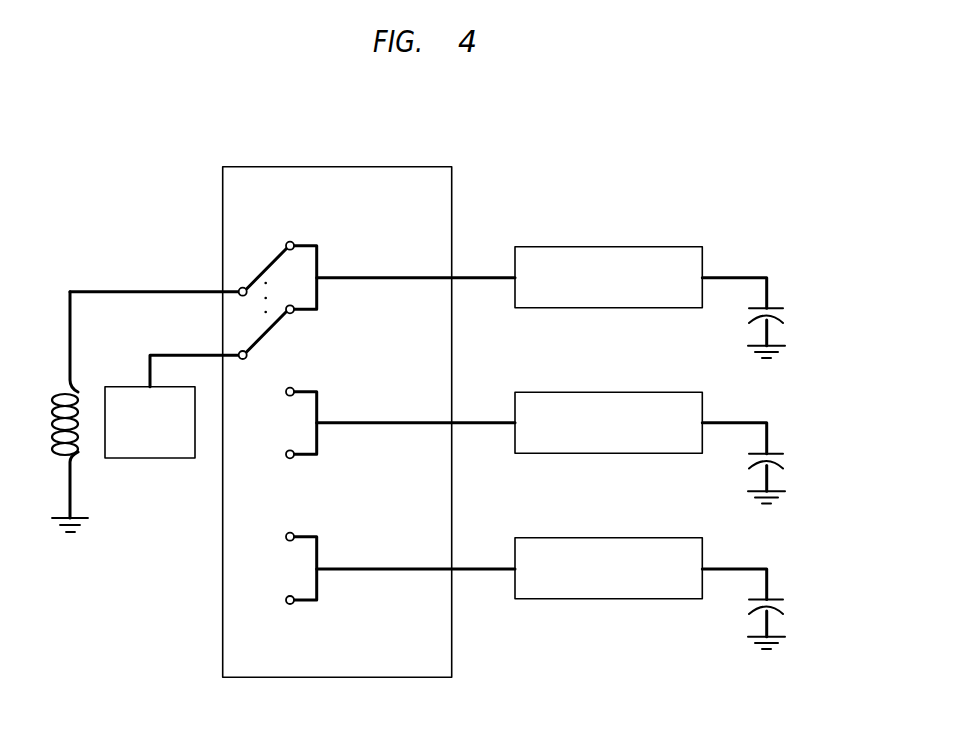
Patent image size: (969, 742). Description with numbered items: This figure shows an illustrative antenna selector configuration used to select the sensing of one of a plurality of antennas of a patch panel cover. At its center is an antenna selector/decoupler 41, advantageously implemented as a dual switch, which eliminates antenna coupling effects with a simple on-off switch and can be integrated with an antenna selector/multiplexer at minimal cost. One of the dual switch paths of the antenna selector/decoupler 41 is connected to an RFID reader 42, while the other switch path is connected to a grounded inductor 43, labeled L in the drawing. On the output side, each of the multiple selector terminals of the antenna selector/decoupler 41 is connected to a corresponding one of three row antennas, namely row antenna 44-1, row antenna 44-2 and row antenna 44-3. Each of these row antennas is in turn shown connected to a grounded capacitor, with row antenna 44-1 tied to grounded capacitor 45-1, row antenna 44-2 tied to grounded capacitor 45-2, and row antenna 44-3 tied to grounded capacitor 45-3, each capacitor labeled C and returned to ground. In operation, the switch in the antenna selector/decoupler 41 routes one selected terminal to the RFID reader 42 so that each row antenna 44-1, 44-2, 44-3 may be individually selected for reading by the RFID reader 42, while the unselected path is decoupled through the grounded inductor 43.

The antenna selector/decoupler 41 is at (262, 680).
The RFID reader 42 is at (145, 460).
The grounded inductor 43 is at (50, 450).
The row antenna 44-1 is at (663, 245).
The row antenna 44-2 is at (663, 390).
The row antenna 44-3 is at (663, 536).
The grounded capacitor 45-1 is at (822, 302).
The grounded capacitor 45-2 is at (820, 448).
The grounded capacitor 45-3 is at (820, 594).